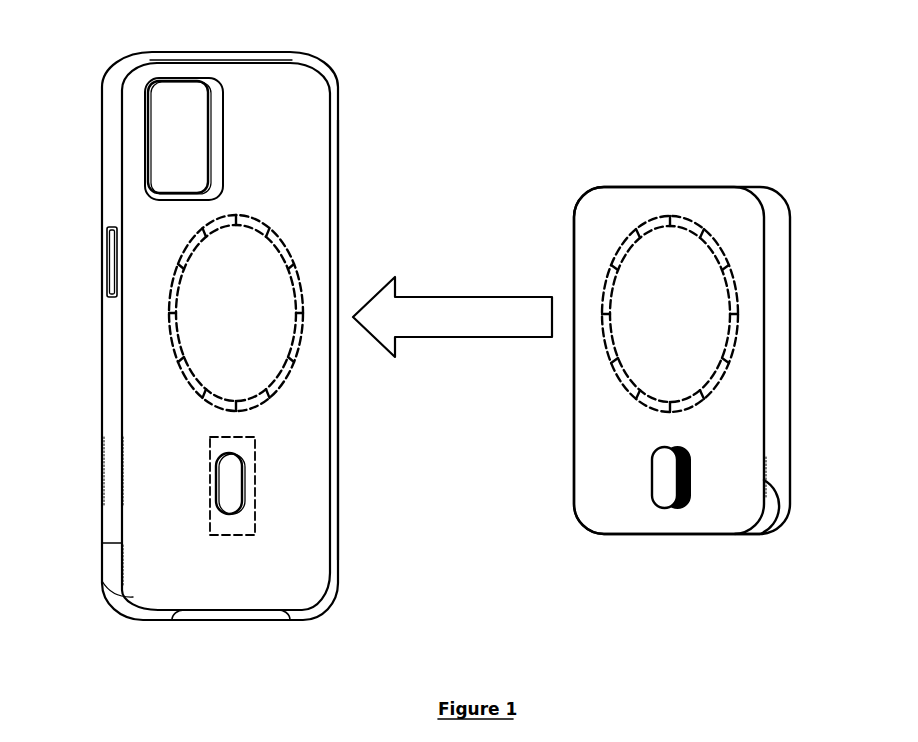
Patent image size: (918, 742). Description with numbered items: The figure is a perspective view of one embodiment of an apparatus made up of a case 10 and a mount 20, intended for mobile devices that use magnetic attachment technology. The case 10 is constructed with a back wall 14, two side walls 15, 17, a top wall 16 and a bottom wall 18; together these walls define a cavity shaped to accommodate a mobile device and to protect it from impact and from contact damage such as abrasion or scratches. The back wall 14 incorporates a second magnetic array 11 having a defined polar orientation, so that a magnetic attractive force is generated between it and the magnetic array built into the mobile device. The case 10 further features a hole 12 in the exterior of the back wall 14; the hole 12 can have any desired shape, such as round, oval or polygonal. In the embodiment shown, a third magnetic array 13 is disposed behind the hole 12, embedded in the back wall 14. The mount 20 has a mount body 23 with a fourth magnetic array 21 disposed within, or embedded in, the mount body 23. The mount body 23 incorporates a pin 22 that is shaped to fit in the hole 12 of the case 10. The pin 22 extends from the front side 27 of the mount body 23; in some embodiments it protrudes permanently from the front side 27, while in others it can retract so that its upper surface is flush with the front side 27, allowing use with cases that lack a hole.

The case 10 is at (350, 132).
The second magnetic array 11 is at (187, 378).
The hole 12 is at (232, 497).
The third magnetic array 13 is at (253, 525).
The back wall 14 is at (293, 144).
The side wall 15 is at (115, 182).
The top wall 16 is at (185, 53).
The side wall 17 is at (337, 227).
The bottom wall 18 is at (250, 612).
The mount 20 is at (669, 173).
The fourth magnetic array 21 is at (627, 380).
The pin 22 is at (667, 493).
The mount body 23 is at (783, 300).
The front side 27 is at (621, 227).